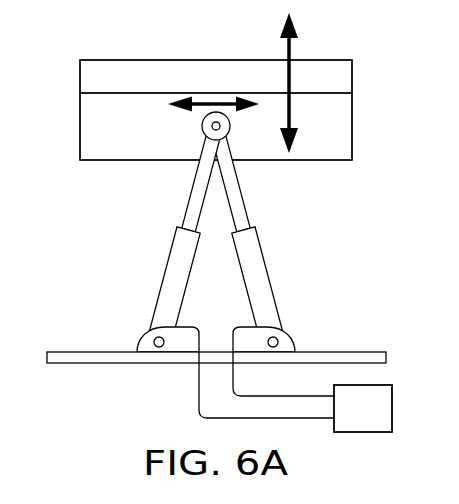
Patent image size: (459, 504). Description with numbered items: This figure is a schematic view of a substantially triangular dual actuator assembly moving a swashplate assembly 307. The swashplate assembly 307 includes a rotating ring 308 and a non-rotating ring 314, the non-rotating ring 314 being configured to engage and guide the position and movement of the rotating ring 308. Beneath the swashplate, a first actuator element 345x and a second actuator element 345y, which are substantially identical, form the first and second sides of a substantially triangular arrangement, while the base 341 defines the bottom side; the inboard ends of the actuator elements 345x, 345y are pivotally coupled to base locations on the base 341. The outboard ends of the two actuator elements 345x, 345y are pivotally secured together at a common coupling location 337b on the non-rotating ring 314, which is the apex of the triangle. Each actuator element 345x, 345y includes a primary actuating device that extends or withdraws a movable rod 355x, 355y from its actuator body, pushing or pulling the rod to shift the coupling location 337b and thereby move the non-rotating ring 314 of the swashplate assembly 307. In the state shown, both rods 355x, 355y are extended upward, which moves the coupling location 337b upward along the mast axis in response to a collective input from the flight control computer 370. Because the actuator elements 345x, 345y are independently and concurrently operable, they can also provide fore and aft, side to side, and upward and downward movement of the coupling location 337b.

The swashplate assembly 307 is at (358, 100).
The rotating ring 308 is at (80, 77).
The non-rotating ring 314 is at (80, 127).
The coupling location 337b is at (203, 123).
The movable rod 355x is at (189, 204).
The movable rod 355y is at (243, 204).
The first actuator element 345x is at (158, 292).
The second actuator element 345y is at (274, 291).
The base 341 is at (63, 364).
The flight control computer 370 is at (363, 432).